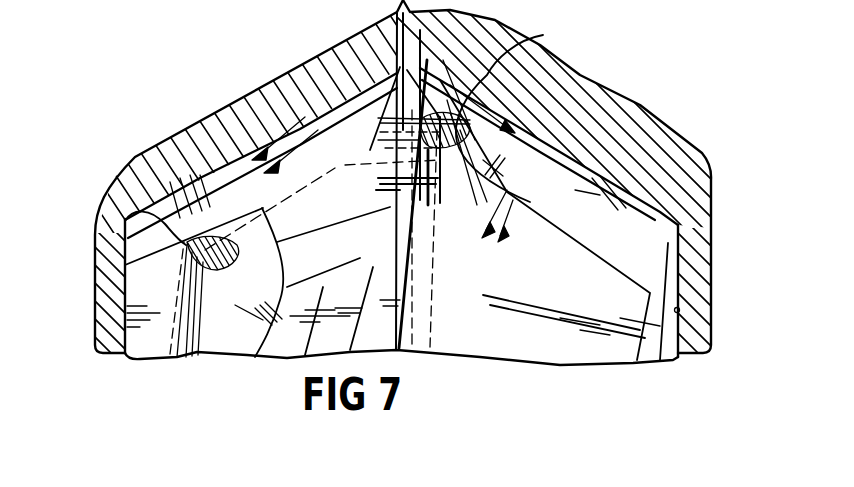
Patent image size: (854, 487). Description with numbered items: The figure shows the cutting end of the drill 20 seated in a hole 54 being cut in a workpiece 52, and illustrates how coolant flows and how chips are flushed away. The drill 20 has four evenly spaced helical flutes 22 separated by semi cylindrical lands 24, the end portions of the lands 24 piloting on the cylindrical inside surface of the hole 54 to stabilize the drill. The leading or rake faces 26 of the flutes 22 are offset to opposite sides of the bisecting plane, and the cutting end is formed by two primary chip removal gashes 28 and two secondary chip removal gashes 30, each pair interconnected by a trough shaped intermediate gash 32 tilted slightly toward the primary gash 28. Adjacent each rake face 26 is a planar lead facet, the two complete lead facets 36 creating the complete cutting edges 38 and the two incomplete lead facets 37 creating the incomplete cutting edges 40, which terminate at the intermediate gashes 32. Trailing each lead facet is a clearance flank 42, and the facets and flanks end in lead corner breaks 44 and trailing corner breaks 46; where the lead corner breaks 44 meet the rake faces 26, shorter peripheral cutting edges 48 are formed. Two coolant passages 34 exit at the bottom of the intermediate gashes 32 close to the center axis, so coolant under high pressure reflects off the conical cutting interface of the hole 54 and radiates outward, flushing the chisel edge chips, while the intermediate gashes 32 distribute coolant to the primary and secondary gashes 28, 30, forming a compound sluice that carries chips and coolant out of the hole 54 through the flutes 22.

The drill 20 is at (668, 385).
The flutes 22 is at (200, 360).
The land 24 is at (112, 317).
The leading faces 26 is at (153, 143).
The primary chip removal gashes 28 is at (125, 267).
The secondary chip removal gashes 30 is at (505, 228).
The intermediate gash 32 is at (471, 108).
The coolant passages 34 is at (436, 352).
The complete lead facets 36 is at (207, 113).
The incomplete lead facets 37 is at (504, 171).
The complete cutting edges 38 is at (262, 95).
The incomplete cutting edges 40 is at (462, 240).
The clearance flank 42 is at (272, 250).
The lead corner break 44 is at (105, 207).
The trailing corner break 46 is at (258, 357).
The peripheral cutting edges 48 is at (114, 173).
The workpiece 52 is at (710, 152).
The hole 54 is at (678, 310).